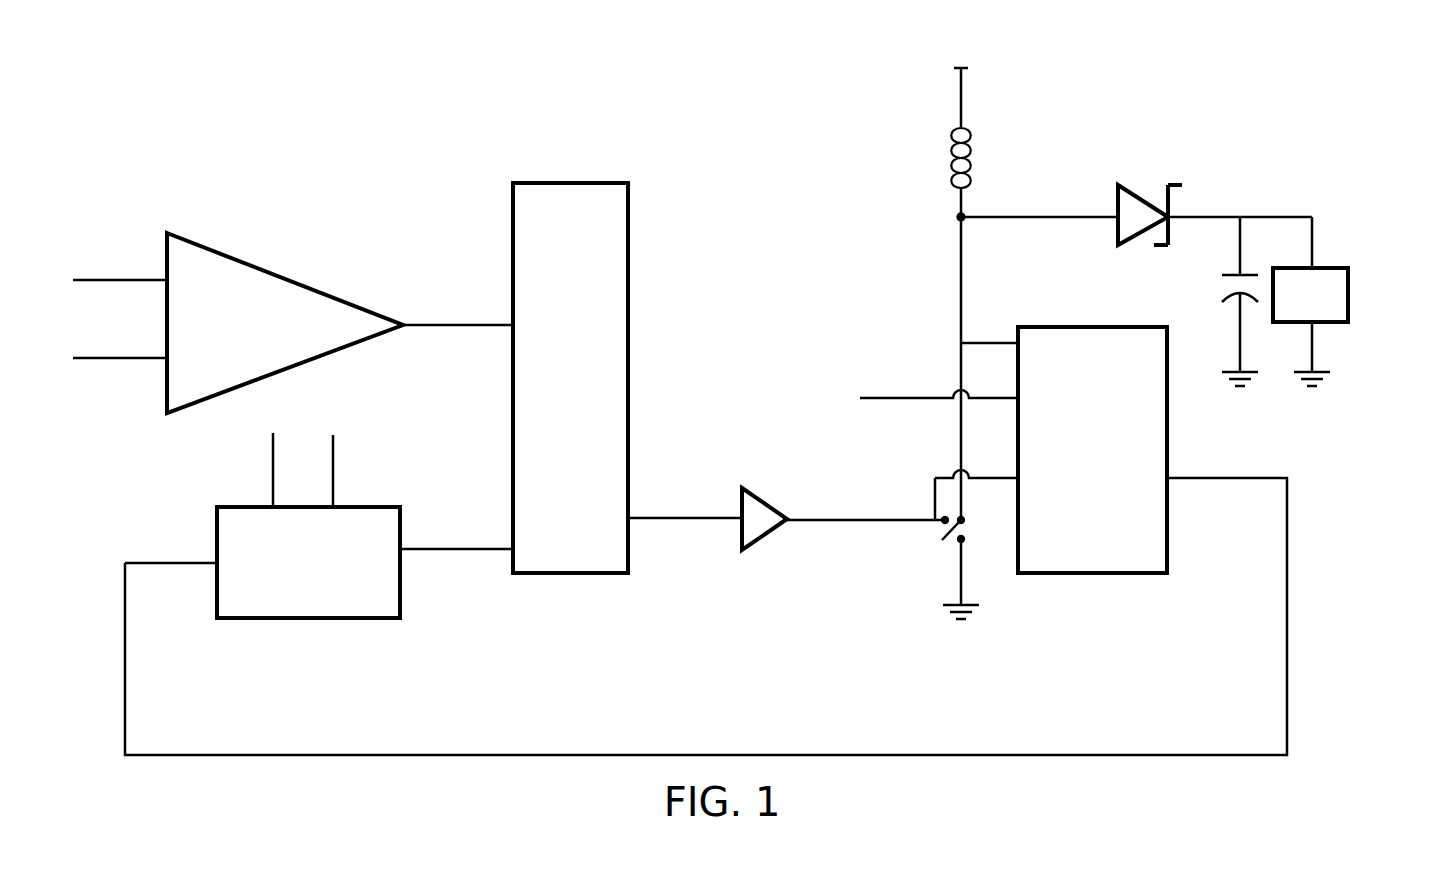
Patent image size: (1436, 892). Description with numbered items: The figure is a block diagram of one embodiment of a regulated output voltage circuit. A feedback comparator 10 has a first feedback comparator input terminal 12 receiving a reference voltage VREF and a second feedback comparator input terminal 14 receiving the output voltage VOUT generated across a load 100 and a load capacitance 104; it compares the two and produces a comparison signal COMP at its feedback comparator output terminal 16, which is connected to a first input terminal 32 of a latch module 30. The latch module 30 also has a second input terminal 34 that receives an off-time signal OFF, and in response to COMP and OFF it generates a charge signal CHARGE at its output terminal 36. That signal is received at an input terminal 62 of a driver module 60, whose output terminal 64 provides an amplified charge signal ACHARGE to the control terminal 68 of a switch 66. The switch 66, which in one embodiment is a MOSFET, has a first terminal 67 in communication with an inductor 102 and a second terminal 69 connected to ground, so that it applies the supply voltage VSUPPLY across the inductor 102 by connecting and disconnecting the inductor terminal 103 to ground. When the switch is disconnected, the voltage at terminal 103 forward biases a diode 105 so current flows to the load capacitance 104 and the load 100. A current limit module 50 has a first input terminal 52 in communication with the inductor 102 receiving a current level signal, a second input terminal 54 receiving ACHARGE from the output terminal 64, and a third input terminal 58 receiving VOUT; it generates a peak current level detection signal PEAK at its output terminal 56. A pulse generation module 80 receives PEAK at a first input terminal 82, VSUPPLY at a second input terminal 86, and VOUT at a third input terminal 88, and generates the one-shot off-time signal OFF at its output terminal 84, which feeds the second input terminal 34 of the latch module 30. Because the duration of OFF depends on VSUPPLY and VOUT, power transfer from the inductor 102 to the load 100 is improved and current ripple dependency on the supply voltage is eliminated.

The feedback comparator 10 is at (285, 323).
The first feedback comparator input terminal 12 is at (162, 284).
The second feedback comparator input terminal 14 is at (162, 362).
The feedback comparator output terminal 16 is at (400, 322).
The latch module 30 is at (570, 378).
The first input terminal 32 is at (511, 322).
The second input terminal 34 is at (511, 546).
The output terminal 36 is at (632, 522).
The current limit module 50 is at (1092, 450).
The first input terminal 52 is at (1015, 345).
The second input terminal 54 is at (1015, 477).
The output terminal 56 is at (1170, 478).
The third input terminal 58 is at (1015, 400).
The driver module 60 is at (752, 492).
The input terminal 62 is at (740, 524).
The output terminal 64 is at (781, 508).
The switch 66 is at (966, 530).
The first terminal 67 is at (964, 518).
The control terminal 68 is at (942, 525).
The second terminal 69 is at (953, 545).
The pulse generation module 80 is at (308, 562).
The first input terminal 82 is at (212, 566).
The output terminal 84 is at (403, 555).
The second input terminal 86 is at (270, 505).
The third input terminal 88 is at (337, 505).
The load 100 is at (1340, 270).
The inductor 102 is at (982, 160).
The terminal 103 is at (958, 215).
The load capacitance 104 is at (1218, 283).
The diode 105 is at (1124, 192).